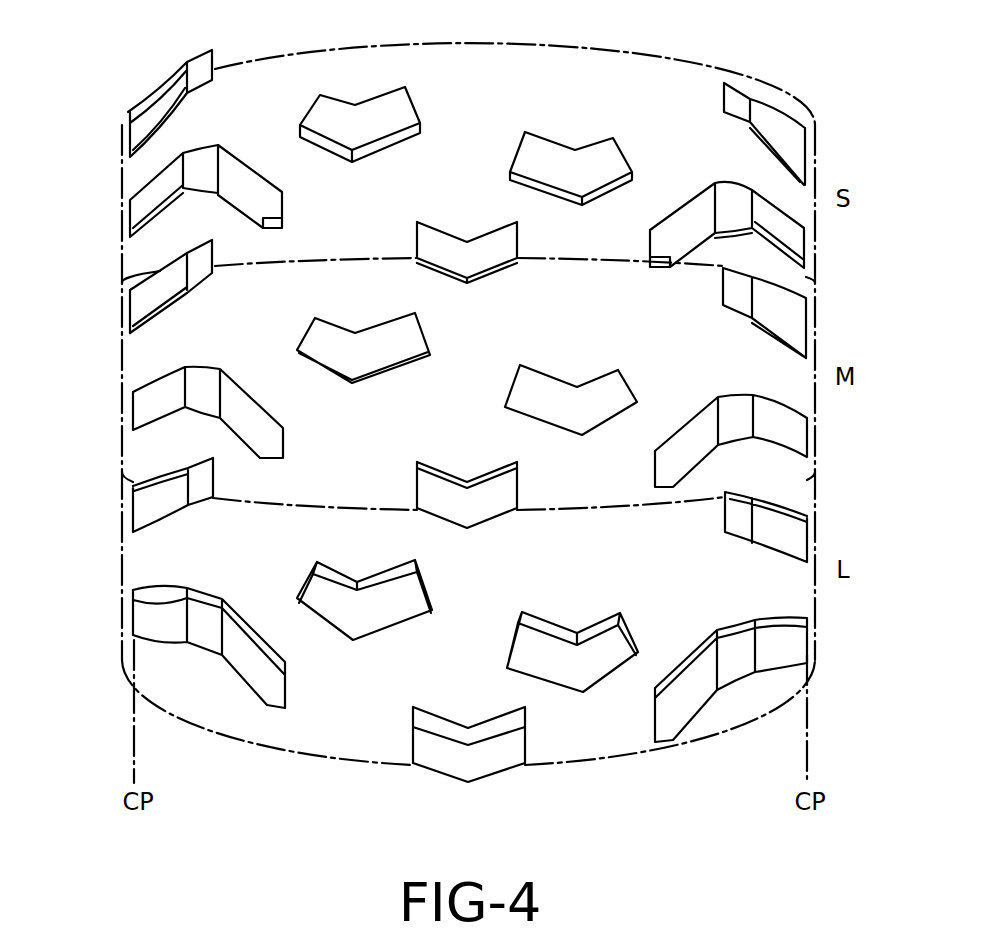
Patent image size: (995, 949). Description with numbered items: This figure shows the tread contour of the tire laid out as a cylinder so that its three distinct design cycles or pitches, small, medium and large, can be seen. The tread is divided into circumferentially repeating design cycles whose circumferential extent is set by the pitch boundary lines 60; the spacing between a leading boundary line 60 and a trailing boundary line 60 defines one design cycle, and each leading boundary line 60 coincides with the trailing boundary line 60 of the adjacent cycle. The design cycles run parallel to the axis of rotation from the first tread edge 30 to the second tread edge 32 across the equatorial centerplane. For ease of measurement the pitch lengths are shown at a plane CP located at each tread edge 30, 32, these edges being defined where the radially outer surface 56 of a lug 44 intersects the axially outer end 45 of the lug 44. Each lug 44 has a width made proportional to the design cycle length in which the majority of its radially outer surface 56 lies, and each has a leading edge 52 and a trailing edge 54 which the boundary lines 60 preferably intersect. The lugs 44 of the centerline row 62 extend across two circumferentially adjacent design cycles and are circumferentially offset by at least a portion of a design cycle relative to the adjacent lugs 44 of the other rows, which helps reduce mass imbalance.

The first tread edge 30 is at (122, 180).
The second tread edge 32 is at (817, 138).
The lug 44 is at (173, 88).
The axially outer end of the lug 45 is at (130, 125).
The leading edge of the lug 52 is at (373, 148).
The trailing edge of the lug 54 is at (368, 103).
The radially outer surface of the lug 56 is at (398, 113).
The pitch boundary line 60 is at (583, 262).
The centerline row of lugs 62 is at (445, 778).